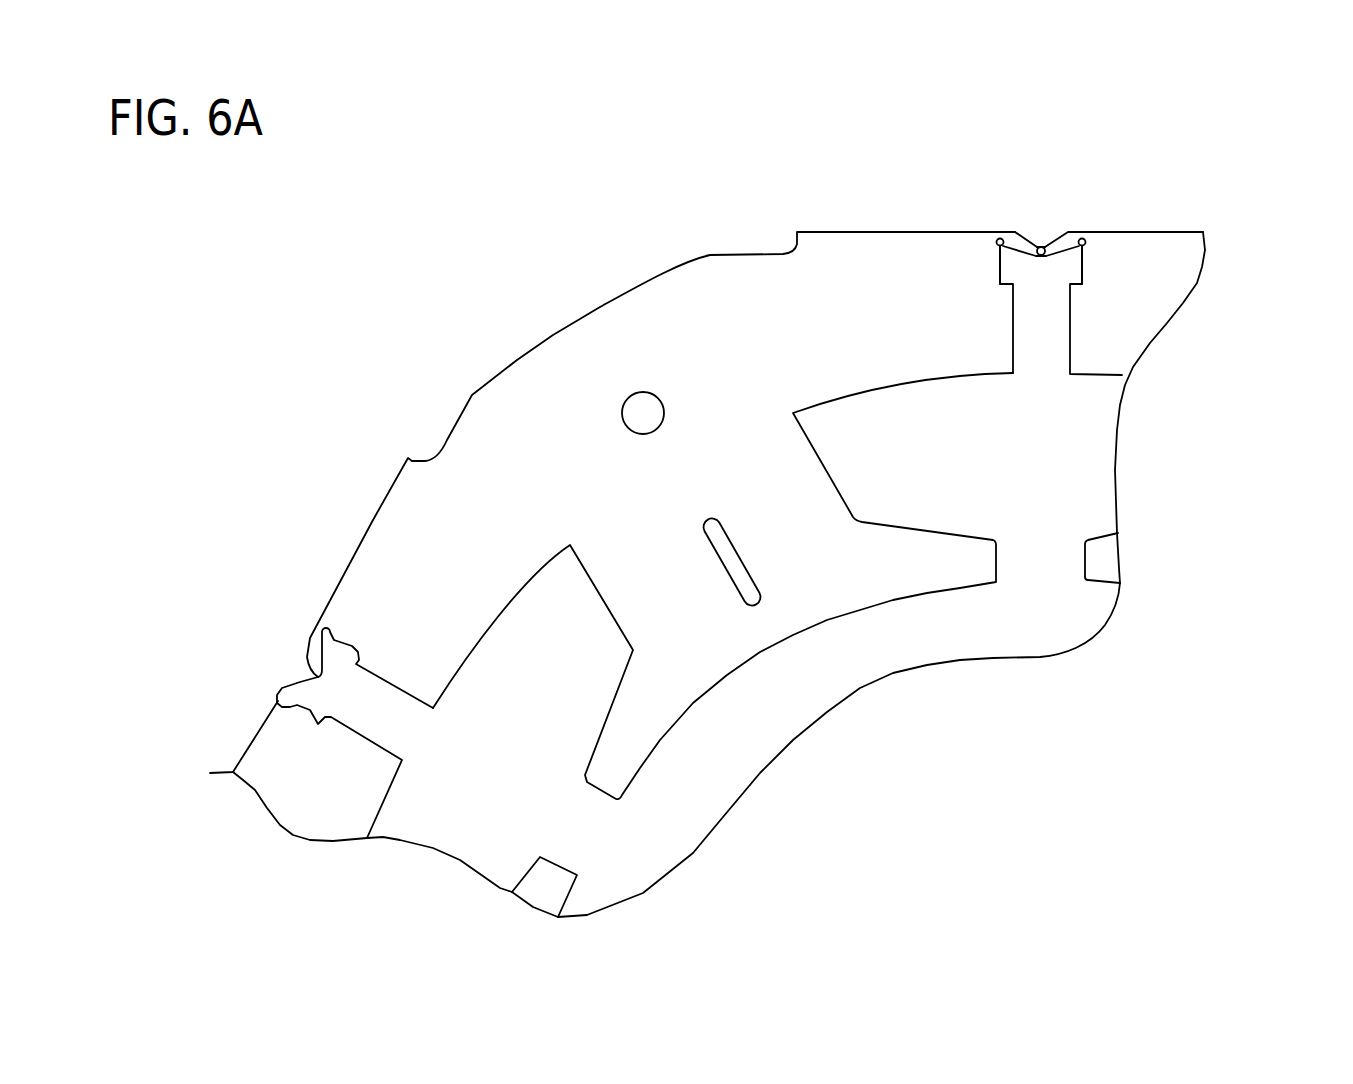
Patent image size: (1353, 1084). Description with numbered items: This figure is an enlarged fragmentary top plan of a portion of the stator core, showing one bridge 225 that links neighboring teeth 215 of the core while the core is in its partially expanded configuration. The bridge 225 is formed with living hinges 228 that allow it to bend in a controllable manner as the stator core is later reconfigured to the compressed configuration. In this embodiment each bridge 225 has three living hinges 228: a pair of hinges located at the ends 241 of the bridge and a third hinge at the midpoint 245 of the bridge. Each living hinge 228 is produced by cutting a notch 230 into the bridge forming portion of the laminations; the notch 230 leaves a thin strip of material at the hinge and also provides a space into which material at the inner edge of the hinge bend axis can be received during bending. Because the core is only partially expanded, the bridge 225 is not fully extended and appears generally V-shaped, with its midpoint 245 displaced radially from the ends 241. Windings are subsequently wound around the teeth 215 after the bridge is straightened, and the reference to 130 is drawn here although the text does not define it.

The teeth 215 is at (803, 560).
The bridge 225 is at (1050, 213).
The ends of the bridge 241 is at (1000, 236).
The living hinge 228 is at (1000, 236).
The notch 230 is at (997, 247).
The contact point 130 is at (1043, 245).
The midpoint of the bridge 245 is at (1045, 256).